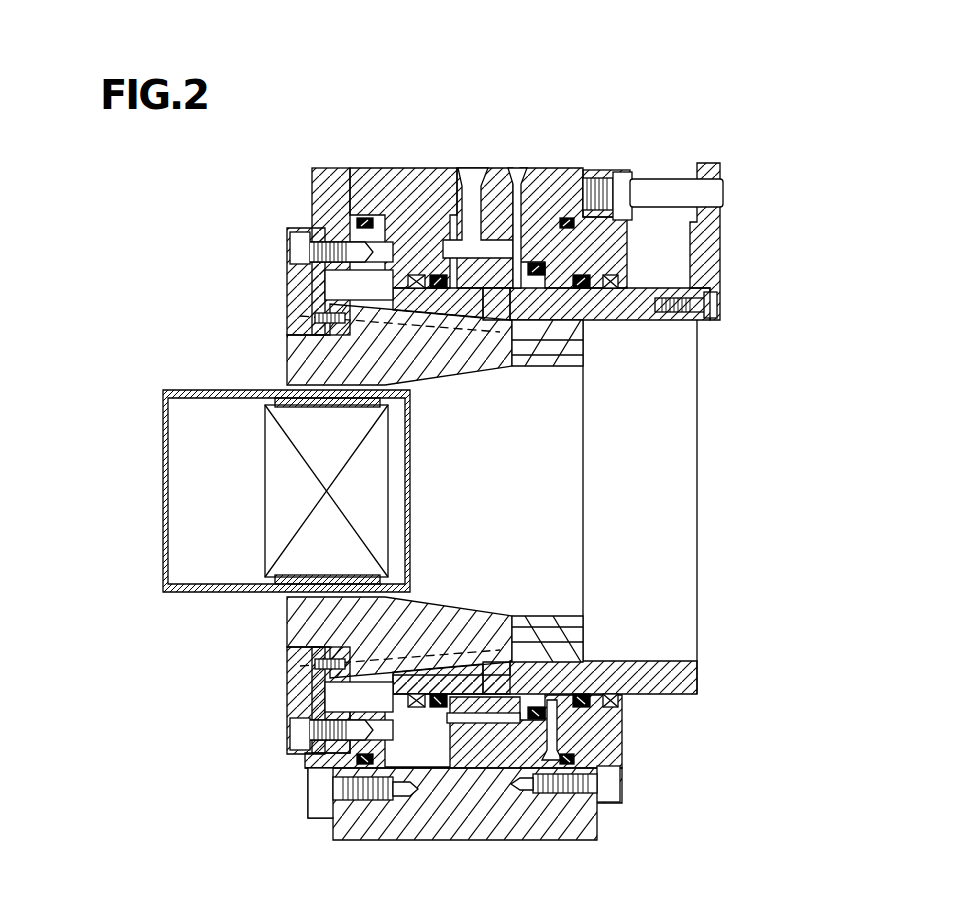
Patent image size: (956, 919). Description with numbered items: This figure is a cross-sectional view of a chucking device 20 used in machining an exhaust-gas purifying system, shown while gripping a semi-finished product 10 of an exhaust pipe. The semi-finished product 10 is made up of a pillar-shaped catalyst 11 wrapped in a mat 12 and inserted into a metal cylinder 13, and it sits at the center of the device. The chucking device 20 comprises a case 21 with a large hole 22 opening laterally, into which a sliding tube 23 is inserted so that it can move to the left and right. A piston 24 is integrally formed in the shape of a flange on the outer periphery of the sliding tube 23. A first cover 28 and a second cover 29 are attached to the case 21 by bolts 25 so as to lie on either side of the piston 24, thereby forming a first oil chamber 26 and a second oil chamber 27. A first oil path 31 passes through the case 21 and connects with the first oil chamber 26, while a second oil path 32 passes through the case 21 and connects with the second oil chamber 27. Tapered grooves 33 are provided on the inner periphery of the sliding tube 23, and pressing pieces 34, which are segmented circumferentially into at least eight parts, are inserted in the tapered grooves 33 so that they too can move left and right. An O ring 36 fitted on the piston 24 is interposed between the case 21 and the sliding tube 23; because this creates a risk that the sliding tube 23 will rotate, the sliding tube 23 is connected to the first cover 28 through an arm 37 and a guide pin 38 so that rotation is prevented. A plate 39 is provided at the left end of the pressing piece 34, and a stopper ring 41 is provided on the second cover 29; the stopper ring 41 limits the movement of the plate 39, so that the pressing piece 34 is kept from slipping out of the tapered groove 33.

The semi-finished product 10 is at (214, 511).
The catalyst 11 is at (275, 502).
The mat 12 is at (275, 578).
The metal cylinder 13 is at (192, 592).
The chucking device 20 is at (318, 79).
The case 21 is at (410, 168).
The large hole 22 is at (470, 300).
The sliding tube 23 is at (627, 318).
The piston 24 is at (497, 300).
The bolts 25 is at (316, 790).
The first oil chamber 26 is at (538, 168).
The second oil chamber 27 is at (478, 195).
The first cover 28 is at (608, 172).
The second cover 29 is at (343, 168).
The first oil path 31 is at (521, 170).
The second oil path 32 is at (481, 170).
The tapered grooves 33 is at (555, 330).
The pressing pieces 34 is at (293, 353).
The O ring 36 is at (536, 278).
The arm 37 is at (722, 255).
The guide pin 38 is at (670, 180).
The plate 39 is at (297, 280).
The stopper ring 41 is at (290, 232).